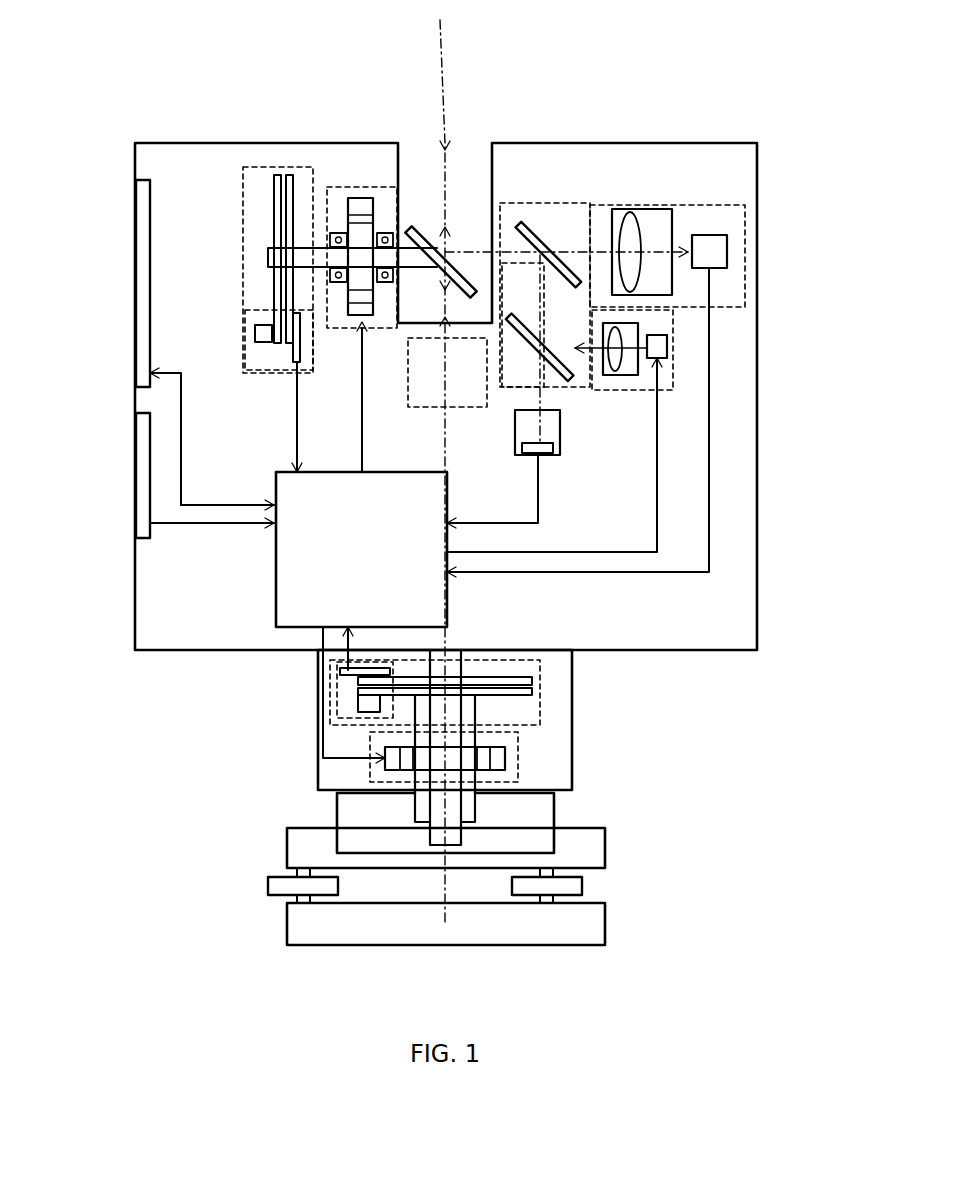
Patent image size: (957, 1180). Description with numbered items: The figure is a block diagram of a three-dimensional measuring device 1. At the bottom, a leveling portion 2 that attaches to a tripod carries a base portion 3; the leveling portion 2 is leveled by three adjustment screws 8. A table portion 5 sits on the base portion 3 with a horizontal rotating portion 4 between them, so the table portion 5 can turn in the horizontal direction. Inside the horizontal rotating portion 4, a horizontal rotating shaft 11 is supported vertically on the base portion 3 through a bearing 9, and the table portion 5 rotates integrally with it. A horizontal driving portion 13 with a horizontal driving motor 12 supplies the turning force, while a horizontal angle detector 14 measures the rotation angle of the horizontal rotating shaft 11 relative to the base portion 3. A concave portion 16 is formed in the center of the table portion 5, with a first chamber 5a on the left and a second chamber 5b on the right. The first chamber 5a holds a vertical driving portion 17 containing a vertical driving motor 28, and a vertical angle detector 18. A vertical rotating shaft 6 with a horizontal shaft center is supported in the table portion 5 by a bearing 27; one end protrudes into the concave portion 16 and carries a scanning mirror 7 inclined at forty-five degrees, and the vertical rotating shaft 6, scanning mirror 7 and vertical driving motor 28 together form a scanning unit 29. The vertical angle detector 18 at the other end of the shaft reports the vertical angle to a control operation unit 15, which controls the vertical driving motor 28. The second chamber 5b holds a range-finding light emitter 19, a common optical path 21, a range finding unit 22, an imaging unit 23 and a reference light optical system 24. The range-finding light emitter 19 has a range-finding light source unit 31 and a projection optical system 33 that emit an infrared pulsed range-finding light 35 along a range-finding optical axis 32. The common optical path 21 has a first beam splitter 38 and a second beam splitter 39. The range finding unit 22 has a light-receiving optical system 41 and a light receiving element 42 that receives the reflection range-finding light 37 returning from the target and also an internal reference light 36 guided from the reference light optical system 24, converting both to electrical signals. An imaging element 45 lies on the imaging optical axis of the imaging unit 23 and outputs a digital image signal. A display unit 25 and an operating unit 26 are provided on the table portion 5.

The three-dimensional measuring device 1 is at (157, 76).
The leveling portion 2 is at (257, 889).
The base portion 3 is at (555, 803).
The horizontal rotating portion 4 is at (572, 717).
The table portion 5 is at (201, 651).
The first chamber 5a is at (183, 191).
The second chamber 5b is at (669, 178).
The vertical rotating shaft 6 is at (440, 273).
The scanning mirror 7 is at (428, 224).
The adjustment screws 8 is at (582, 885).
The bearing 9 is at (475, 810).
The horizontal rotating shaft 11 is at (430, 810).
The horizontal driving motor 12 is at (507, 757).
The horizontal driving portion 13 is at (518, 773).
The horizontal angle detector 14 is at (540, 683).
The control operation unit 15 is at (276, 572).
The concave portion 16 is at (480, 193).
The vertical driving portion 17 is at (366, 187).
The vertical angle detector 18 is at (243, 257).
The range-finding light emitter 19 is at (672, 368).
The common optical path 21 is at (500, 205).
The range finding unit 22 is at (747, 247).
The imaging unit 23 is at (515, 422).
The reference light optical system 24 is at (430, 407).
The display unit 25 is at (136, 225).
The operating unit 26 is at (136, 463).
The bearing 27 is at (336, 330).
The vertical driving motor 28 is at (358, 192).
The scanning unit 29 is at (418, 147).
The range-finding light source unit 31 is at (667, 342).
The range-finding optical axis 32 is at (433, 461).
The projection optical system 33 is at (622, 376).
The range-finding light 35 is at (465, 210).
The internal reference light 36 is at (410, 343).
The reflection range-finding light 37 is at (449, 145).
The first beam splitter 38 is at (527, 317).
The second beam splitter 39 is at (548, 230).
The light-receiving optical system 41 is at (643, 209).
The light receiving element 42 is at (712, 235).
The imaging element 45 is at (518, 449).